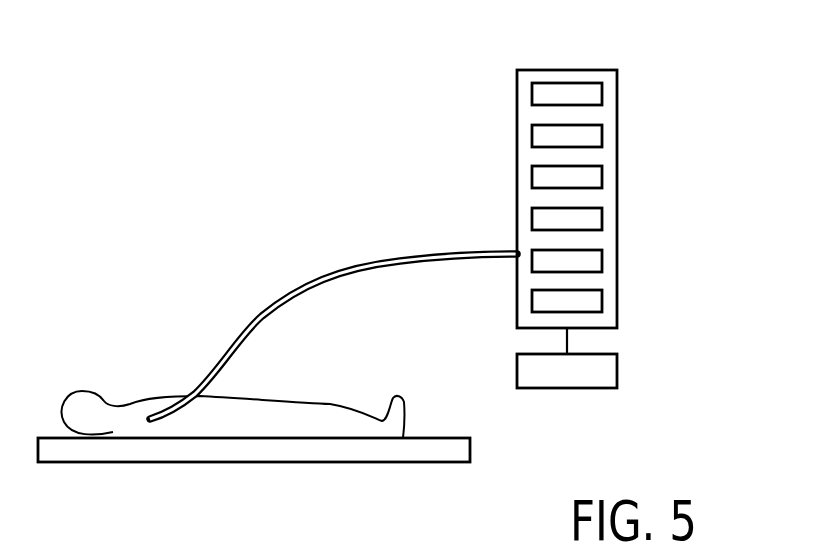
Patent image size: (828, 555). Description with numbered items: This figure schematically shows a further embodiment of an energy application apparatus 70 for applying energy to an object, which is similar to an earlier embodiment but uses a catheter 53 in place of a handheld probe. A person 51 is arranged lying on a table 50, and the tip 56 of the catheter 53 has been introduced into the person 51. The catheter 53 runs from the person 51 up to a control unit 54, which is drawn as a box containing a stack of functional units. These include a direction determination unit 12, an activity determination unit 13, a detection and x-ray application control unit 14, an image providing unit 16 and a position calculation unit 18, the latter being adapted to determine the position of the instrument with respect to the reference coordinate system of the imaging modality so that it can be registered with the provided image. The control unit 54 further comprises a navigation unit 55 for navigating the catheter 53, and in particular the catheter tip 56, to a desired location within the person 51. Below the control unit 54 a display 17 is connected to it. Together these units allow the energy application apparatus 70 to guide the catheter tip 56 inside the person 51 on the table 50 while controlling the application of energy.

The direction determination unit 12 is at (602, 95).
The activity determination unit 13 is at (602, 137).
The detection and x-ray application control unit 14 is at (602, 178).
The image providing unit 16 is at (602, 220).
The display 17 is at (617, 372).
The position calculation unit 18 is at (602, 262).
The table 50 is at (430, 463).
The person 51 is at (142, 396).
The catheter 53 is at (256, 318).
The control unit 54 is at (611, 70).
The navigation unit 55 is at (602, 302).
The tip 56 is at (148, 424).
The energy application apparatus 70 is at (378, 158).